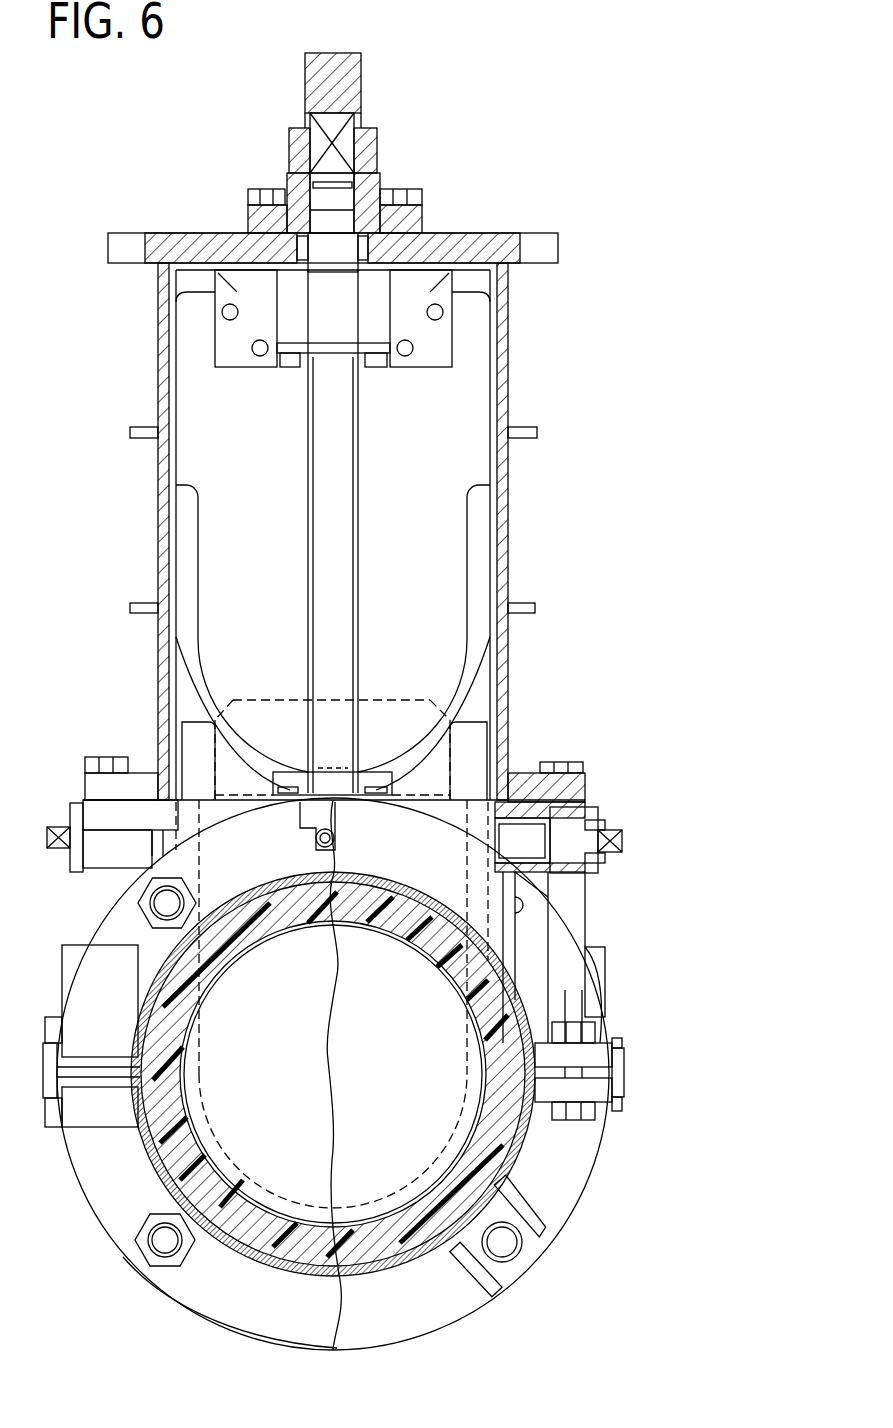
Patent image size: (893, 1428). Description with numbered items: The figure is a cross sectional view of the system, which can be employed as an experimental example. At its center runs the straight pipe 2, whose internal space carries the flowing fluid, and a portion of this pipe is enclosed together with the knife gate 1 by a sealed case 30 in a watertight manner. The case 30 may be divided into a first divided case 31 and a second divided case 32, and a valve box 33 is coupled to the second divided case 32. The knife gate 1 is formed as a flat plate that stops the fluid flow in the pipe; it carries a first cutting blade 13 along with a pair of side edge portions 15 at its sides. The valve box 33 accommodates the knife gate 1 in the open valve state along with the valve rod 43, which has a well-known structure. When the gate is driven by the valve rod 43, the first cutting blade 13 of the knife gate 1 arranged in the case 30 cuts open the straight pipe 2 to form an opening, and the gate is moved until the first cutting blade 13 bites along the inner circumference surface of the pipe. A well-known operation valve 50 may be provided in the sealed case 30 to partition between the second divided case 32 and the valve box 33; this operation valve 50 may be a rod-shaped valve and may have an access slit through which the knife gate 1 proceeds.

The knife gate 1 is at (270, 580).
The straight pipe 2 is at (243, 940).
The first cutting blade 13 is at (248, 772).
The side edge portions 15 is at (188, 650).
The sealed case 30 is at (690, 912).
The first divided case 31 is at (520, 1152).
The second divided case 32 is at (513, 975).
The valve box 33 is at (510, 488).
The valve rod 43 is at (357, 542).
The operation valve 50 is at (532, 840).